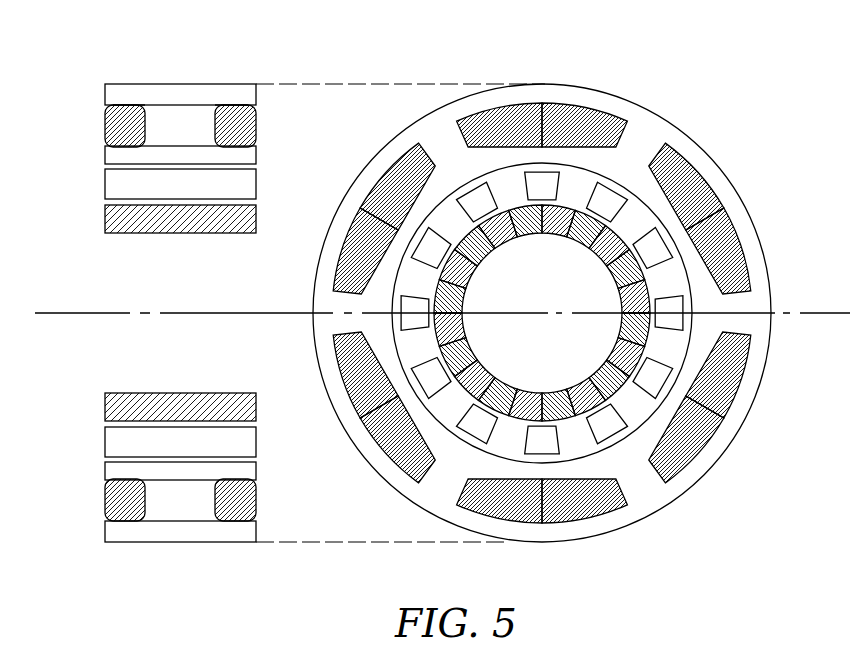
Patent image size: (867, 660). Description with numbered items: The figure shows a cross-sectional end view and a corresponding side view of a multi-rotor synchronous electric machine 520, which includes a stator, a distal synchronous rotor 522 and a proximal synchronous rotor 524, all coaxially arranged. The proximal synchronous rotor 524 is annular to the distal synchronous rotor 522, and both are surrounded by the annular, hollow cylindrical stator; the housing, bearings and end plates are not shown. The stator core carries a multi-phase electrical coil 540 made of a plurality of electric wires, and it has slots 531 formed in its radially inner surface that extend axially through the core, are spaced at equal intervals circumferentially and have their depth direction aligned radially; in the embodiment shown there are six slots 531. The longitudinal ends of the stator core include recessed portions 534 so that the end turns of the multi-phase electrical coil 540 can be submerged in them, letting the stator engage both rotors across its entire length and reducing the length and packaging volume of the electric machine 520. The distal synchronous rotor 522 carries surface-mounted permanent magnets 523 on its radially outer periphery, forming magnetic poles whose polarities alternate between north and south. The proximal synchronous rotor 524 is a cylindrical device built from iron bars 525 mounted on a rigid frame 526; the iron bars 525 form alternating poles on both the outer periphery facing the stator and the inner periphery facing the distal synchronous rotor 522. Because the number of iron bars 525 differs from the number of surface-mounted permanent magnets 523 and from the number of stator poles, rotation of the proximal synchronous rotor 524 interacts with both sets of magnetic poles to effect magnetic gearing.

The multi-rotor synchronous electric machine 520 is at (417, 115).
The distal synchronous rotor 522 is at (387, 312).
The surface-mounted permanent magnets 523 is at (447, 353).
The proximal synchronous rotor 524 is at (429, 248).
The iron bars 525 is at (652, 242).
The rigid frame 526 is at (398, 127).
The slots 531 is at (603, 127).
The recessed portions 534 is at (145, 108).
The multi-phase electrical coil 540 is at (223, 128).